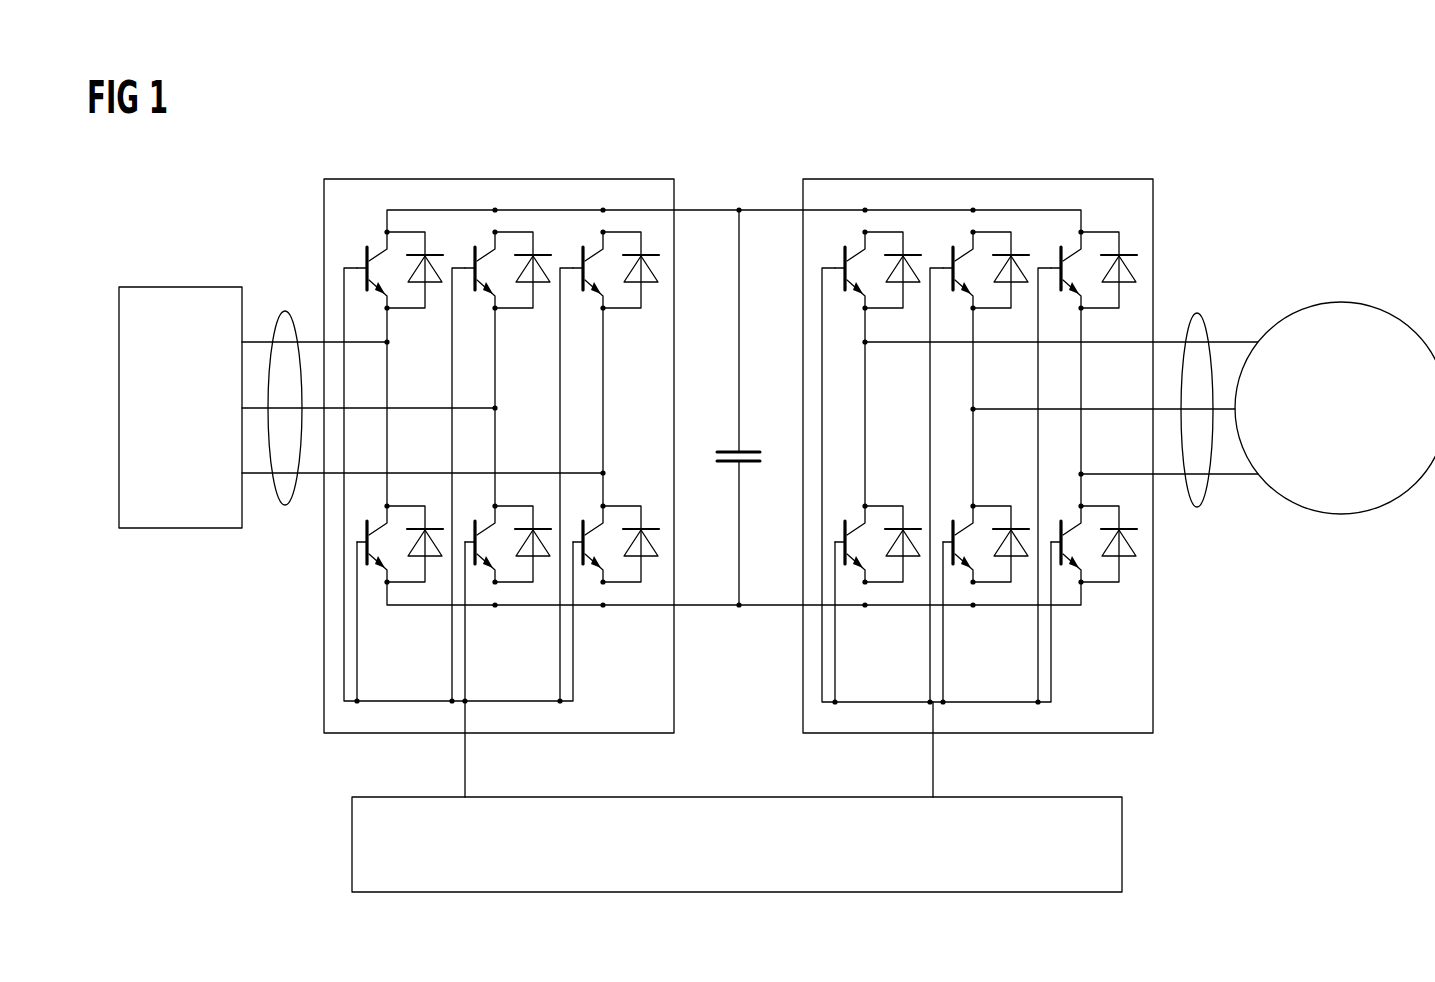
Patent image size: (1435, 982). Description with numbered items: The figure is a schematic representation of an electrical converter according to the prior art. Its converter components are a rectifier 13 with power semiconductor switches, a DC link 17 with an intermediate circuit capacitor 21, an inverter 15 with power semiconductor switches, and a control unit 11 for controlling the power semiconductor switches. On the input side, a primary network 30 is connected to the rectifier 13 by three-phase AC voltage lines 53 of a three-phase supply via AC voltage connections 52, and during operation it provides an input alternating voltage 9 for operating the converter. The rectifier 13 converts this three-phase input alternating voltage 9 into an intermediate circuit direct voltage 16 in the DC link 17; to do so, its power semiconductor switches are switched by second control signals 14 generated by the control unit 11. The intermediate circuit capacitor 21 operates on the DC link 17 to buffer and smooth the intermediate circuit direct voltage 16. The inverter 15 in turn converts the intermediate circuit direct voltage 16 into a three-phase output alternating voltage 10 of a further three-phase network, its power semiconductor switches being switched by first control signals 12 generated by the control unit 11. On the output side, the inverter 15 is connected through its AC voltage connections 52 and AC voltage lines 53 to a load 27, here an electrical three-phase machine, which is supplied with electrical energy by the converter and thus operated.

The primary network 30 is at (157, 287).
The AC voltage connections 52 is at (747, 367).
The AC voltage lines 53 is at (747, 367).
The input alternating voltage 9 is at (283, 311).
The output alternating voltage 10 is at (1197, 313).
The rectifier 13 is at (547, 178).
The inverter 15 is at (1024, 178).
The intermediate circuit direct voltage 16 is at (734, 408).
The DC link 17 is at (712, 209).
The intermediate circuit capacitor 21 is at (734, 450).
The second control signals 14 is at (466, 757).
The first control signals 12 is at (934, 757).
The control unit 11 is at (1123, 841).
The load 27 is at (1343, 302).